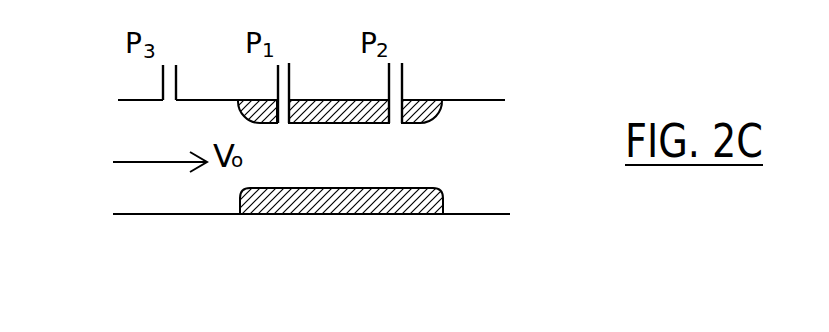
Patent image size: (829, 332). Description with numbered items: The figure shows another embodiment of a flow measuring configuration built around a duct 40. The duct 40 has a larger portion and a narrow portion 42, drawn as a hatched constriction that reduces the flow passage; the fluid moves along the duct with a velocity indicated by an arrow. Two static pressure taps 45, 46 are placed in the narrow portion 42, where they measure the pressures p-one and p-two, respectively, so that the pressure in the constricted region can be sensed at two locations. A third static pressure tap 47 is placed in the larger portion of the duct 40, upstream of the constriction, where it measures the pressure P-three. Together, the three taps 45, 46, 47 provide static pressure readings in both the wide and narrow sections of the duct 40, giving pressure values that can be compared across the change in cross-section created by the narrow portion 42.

The duct 40 is at (180, 225).
The narrow portion 42 is at (325, 202).
The static pressure tap 45 is at (292, 82).
The static pressure tap 46 is at (405, 78).
The third static pressure tap 47 is at (155, 82).